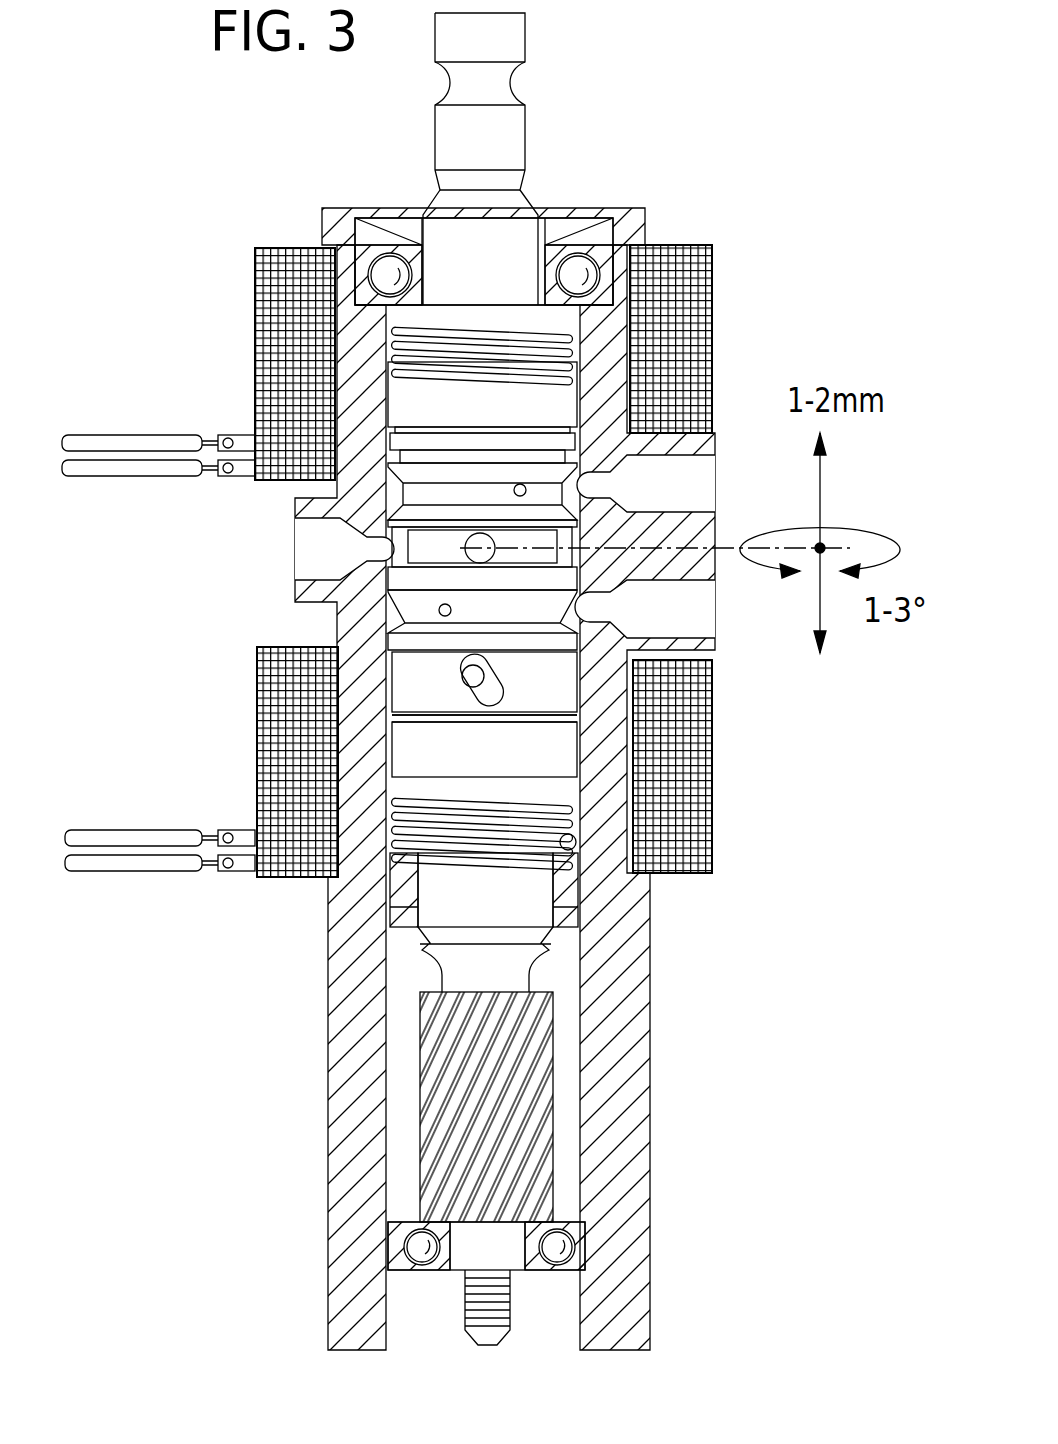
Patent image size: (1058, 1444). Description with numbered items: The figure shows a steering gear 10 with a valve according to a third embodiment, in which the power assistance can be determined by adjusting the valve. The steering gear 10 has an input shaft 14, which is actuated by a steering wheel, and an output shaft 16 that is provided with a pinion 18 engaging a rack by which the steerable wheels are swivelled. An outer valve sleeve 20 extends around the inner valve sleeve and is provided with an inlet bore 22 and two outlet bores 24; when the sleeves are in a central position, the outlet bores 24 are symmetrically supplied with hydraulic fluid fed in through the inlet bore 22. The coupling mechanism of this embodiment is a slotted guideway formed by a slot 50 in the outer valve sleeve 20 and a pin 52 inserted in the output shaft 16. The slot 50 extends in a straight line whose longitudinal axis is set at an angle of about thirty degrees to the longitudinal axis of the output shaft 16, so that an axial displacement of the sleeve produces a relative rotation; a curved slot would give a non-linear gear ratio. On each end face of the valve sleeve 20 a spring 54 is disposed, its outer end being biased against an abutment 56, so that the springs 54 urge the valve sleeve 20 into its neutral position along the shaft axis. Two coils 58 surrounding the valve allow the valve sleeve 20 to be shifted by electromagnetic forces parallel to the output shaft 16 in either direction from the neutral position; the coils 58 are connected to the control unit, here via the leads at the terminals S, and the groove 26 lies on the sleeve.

The steering gear 10 is at (627, 1162).
The input shaft 14 is at (455, 135).
The output shaft 16 is at (530, 907).
The pinion 18 is at (432, 1118).
The outer valve sleeve 20 is at (407, 662).
The inlet bore 22 is at (318, 545).
The outlet bores 24 is at (690, 496).
The control groove 26 is at (457, 718).
The slot 50 is at (580, 700).
The pin 52 is at (463, 678).
The spring 54 is at (380, 325).
The abutment 56 is at (526, 305).
The coils 58 is at (688, 312).
The terminal S is at (285, 485).